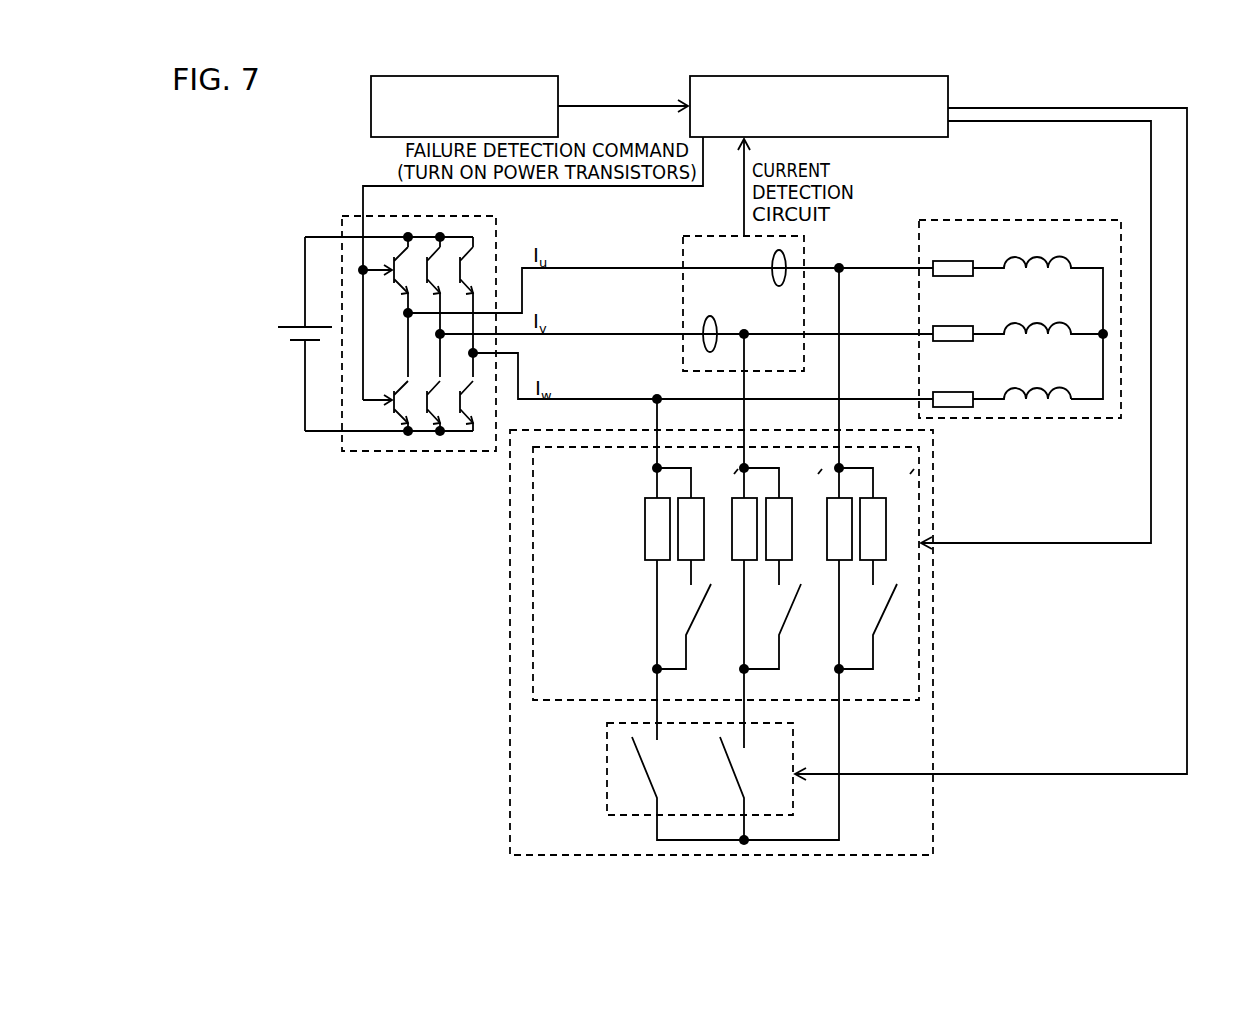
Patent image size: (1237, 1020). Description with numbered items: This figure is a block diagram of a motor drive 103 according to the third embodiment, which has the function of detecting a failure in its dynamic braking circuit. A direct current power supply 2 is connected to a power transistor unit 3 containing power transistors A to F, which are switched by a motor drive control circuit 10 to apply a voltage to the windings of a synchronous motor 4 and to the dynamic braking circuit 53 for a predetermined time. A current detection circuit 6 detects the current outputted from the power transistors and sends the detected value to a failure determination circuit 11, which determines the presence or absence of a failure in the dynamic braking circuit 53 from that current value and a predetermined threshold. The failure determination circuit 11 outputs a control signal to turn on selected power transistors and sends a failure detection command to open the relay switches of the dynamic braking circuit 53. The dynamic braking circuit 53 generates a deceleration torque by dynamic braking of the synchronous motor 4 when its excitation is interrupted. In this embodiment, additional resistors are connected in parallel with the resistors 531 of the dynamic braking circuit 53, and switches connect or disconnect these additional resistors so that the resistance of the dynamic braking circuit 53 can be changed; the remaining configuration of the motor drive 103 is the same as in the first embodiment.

The motor drive control circuit 10 is at (558, 87).
The failure determination circuit 11 is at (948, 95).
The motor drive 103 is at (1086, 95).
The direct current power supply 2 is at (290, 352).
The power transistor unit 3 is at (497, 248).
The synchronous motor 4 is at (995, 220).
The current detection circuit 6 is at (683, 252).
The dynamic braking circuit 53 is at (933, 642).
The resistors 531 is at (533, 565).